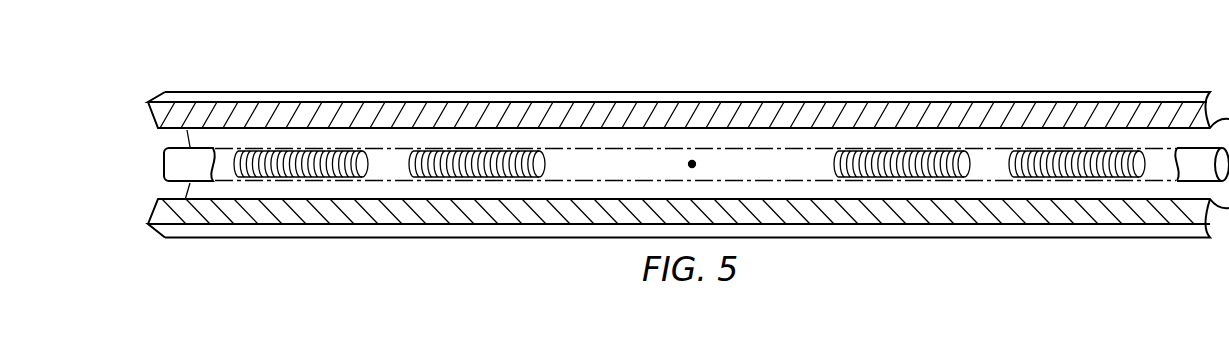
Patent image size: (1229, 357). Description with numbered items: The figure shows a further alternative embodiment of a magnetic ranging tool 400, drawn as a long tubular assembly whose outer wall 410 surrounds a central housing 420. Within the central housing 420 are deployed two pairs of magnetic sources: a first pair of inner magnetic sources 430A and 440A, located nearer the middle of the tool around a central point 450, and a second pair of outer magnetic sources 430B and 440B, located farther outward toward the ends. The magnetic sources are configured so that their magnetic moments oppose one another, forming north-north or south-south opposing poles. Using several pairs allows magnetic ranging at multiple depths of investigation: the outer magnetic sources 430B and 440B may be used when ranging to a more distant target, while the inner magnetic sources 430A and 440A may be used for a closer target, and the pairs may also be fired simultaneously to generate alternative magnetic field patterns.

The magnetic ranging tool 400 is at (792, 51).
The outer tube 410 is at (407, 91).
The central housing 420 is at (180, 147).
The inner magnetic source 430A is at (490, 150).
The outer magnetic source 430B is at (302, 150).
The inner magnetic source 440A is at (903, 150).
The outer magnetic source 440B is at (1068, 150).
The center point 450 is at (692, 161).